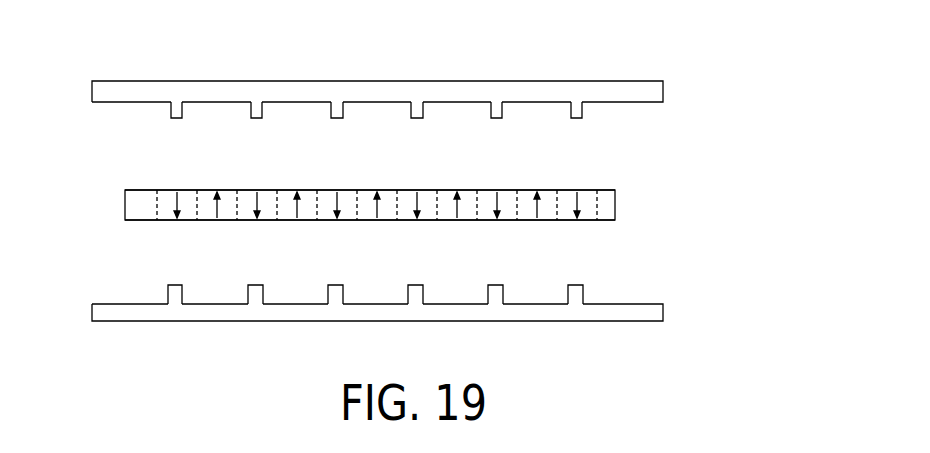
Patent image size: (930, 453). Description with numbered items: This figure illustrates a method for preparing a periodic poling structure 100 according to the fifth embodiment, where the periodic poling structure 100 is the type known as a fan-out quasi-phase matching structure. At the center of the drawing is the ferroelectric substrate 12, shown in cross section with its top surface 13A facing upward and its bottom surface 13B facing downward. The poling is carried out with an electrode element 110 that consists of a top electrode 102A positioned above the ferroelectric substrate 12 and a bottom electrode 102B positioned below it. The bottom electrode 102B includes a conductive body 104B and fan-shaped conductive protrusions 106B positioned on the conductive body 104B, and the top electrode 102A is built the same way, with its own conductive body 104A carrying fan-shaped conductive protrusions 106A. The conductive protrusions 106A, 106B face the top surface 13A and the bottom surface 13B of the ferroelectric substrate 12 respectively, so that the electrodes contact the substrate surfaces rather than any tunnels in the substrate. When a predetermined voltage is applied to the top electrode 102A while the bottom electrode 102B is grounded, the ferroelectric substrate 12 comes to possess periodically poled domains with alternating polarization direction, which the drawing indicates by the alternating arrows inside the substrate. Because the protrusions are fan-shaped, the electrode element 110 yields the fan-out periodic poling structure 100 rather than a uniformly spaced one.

The periodic poling structure 100 is at (121, 233).
The electrode element 110 is at (787, 162).
The top electrode 102A is at (663, 95).
The bottom electrode 102B is at (663, 313).
The conductive body 104A is at (558, 92).
The conductive body 104B is at (553, 312).
The fan-shaped conductive protrusions 106A is at (582, 110).
The fan-shaped conductive protrusions 106B is at (583, 297).
The ferroelectric substrate 12 is at (615, 207).
The top surface 13A is at (605, 190).
The bottom surface 13B is at (605, 220).